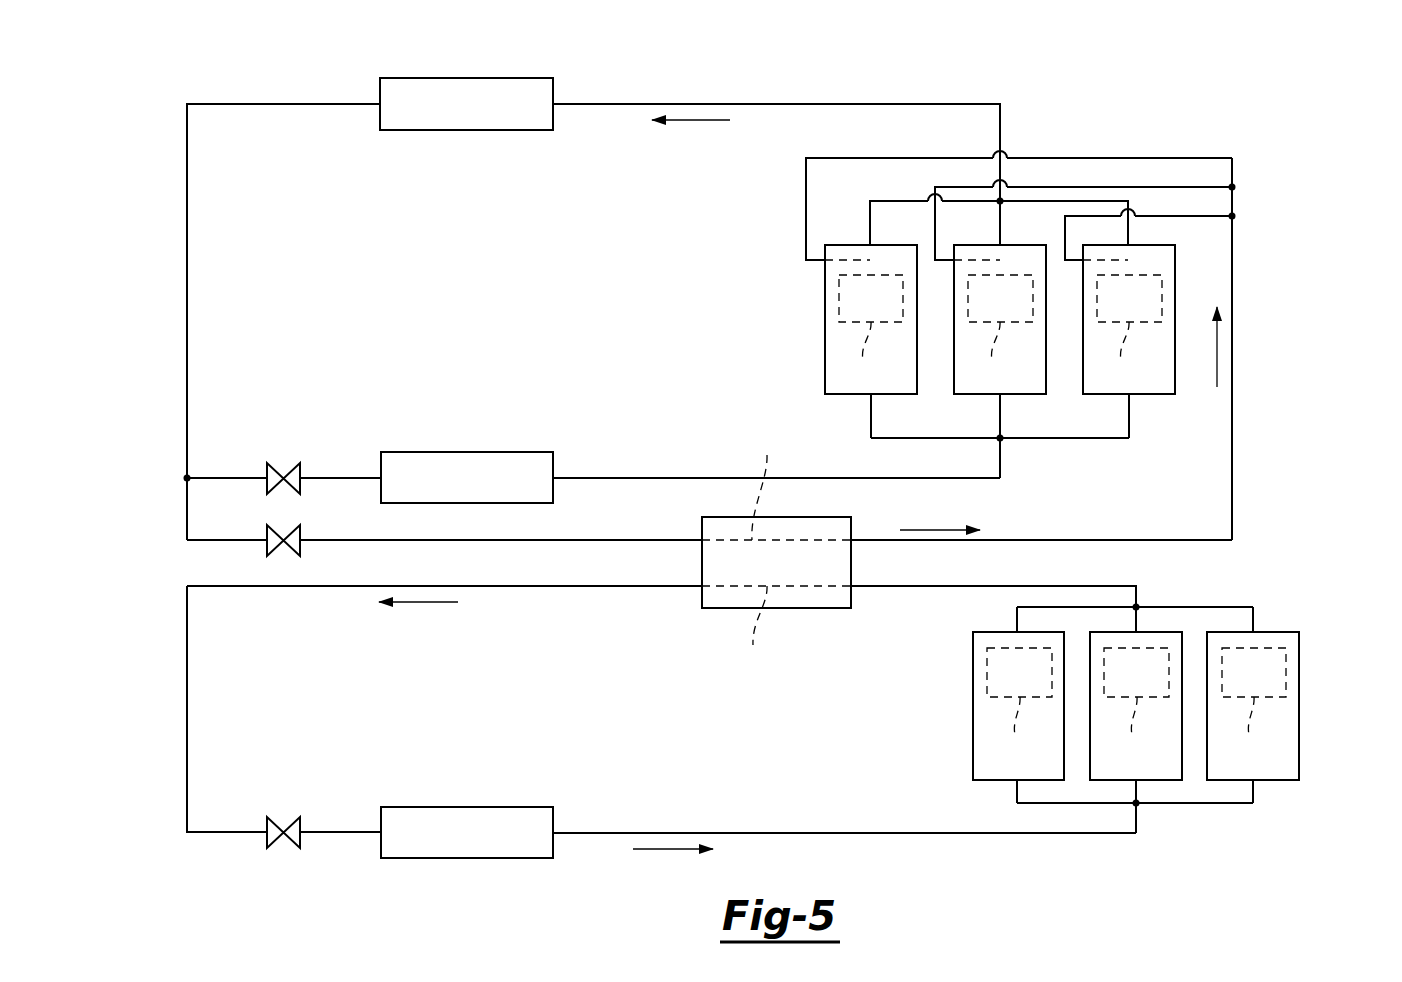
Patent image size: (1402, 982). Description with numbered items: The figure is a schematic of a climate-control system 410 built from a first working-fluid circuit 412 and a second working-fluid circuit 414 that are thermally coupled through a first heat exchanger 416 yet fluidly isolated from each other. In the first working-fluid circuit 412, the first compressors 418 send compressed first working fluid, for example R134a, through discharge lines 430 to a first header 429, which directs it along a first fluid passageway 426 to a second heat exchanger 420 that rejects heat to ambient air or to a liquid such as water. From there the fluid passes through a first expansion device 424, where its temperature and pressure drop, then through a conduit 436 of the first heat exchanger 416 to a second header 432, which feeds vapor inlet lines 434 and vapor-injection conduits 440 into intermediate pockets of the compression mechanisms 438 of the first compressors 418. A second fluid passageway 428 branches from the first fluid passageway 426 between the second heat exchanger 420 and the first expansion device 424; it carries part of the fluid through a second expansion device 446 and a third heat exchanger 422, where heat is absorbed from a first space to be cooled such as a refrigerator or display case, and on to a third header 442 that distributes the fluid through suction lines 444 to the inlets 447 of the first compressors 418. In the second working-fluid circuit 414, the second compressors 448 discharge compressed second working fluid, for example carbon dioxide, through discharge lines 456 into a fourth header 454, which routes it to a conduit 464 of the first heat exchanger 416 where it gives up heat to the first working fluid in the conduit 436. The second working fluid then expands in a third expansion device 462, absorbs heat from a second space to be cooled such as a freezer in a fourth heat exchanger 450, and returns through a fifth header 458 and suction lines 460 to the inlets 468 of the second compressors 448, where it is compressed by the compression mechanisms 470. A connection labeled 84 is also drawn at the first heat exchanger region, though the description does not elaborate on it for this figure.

The climate-control system 410 is at (163, 312).
The first working-fluid circuit 412 is at (178, 102).
The second working-fluid circuit 414 is at (226, 857).
The first heat exchanger 416 is at (697, 578).
The first compressors 418 is at (823, 342).
The second heat exchanger 420 is at (380, 96).
The third heat exchanger 422 is at (466, 450).
The first expansion device 424 is at (268, 545).
The first fluid passageway 426 is at (178, 518).
The second fluid passageway 428 is at (586, 475).
The first header 429 is at (896, 196).
The discharge lines 430 is at (868, 216).
The second header 432 is at (1245, 204).
The vapor inlet lines 434 is at (1215, 216).
The conduit of the first heat exchanger 436 is at (770, 478).
The compression mechanisms 438 is at (989, 357).
The vapor-injection conduits 440 is at (872, 272).
The third header 442 is at (1022, 449).
The suction lines 444 is at (871, 420).
The second expansion device 446 is at (302, 475).
The inlets 447 is at (870, 397).
The second compressors 448 is at (967, 700).
The fourth heat exchanger 450 is at (466, 806).
The fourth header 454 is at (1223, 605).
The discharge lines 456 is at (1016, 618).
The fifth header 458 is at (1182, 808).
The suction lines 460 is at (1030, 804).
The third expansion device 462 is at (302, 828).
The conduit of the first heat exchanger 464 is at (750, 631).
The inlets 468 is at (1015, 782).
The compression mechanisms 470 is at (1136, 707).
The controller connection 84 is at (913, 459).